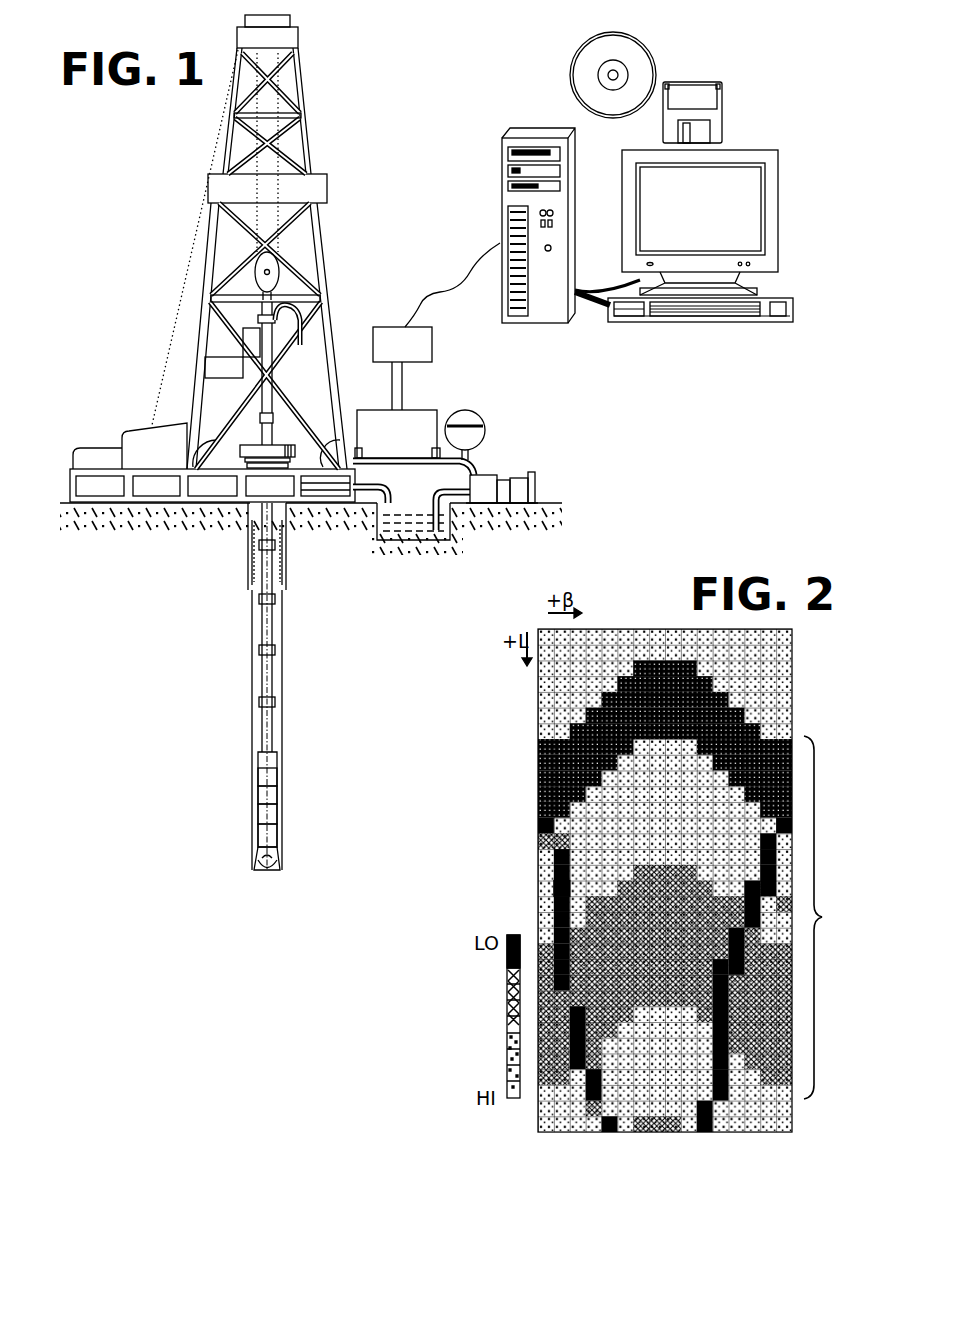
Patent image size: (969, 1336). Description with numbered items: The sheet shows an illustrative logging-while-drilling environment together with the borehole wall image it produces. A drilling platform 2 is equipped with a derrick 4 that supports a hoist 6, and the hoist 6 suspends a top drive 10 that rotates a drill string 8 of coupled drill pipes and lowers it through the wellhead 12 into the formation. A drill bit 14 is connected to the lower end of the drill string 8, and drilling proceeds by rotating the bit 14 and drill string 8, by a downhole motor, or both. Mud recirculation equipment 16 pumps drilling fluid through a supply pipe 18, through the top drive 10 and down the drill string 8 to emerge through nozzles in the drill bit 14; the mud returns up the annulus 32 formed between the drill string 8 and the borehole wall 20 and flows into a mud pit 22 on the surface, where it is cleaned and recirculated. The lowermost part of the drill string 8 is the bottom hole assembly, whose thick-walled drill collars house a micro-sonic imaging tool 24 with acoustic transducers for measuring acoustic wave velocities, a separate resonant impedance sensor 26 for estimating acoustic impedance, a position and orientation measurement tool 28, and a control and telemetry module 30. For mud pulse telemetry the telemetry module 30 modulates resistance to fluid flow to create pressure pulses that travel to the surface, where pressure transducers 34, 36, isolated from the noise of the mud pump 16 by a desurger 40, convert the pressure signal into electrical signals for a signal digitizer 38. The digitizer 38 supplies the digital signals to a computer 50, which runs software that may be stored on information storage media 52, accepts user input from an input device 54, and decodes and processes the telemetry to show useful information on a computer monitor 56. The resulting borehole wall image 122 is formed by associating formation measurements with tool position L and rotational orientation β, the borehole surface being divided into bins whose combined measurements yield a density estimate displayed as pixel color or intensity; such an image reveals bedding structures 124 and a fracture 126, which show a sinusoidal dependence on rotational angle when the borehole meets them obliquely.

In FIG. 1, the drilling platform 2 is at (70, 475).
In FIG. 1, the derrick 4 is at (308, 143).
In FIG. 1, the hoist 6 is at (280, 267).
In FIG. 1, the drill string 8 is at (272, 632).
In FIG. 1, the top drive 10 is at (268, 340).
In FIG. 1, the wellhead 12 is at (252, 450).
In FIG. 1, the drill bit 14 is at (275, 867).
In FIG. 1, the mud recirculation equipment 16 is at (482, 478).
In FIG. 1, the supply pipe 18 is at (445, 466).
In FIG. 1, the borehole wall 20 is at (283, 637).
In FIG. 1, the mud pit 22 is at (392, 525).
In FIG. 1, the micro-sonic imaging tool 24 is at (260, 830).
In FIG. 1, the resonant impedance sensor 26 is at (278, 820).
In FIG. 1, the position and orientation measurement tool 28 is at (258, 795).
In FIG. 1, the control and telemetry module 30 is at (278, 785).
In FIG. 1, the annulus 32 is at (252, 762).
In FIG. 1, the pressure transducer 34 is at (370, 444).
In FIG. 1, the pressure transducer 36 is at (432, 452).
In FIG. 1, the signal digitizer 38 is at (414, 356).
In FIG. 1, the desurger 40 is at (459, 412).
In FIG. 1, the computer 50 is at (572, 248).
In FIG. 1, the information storage media 52 is at (676, 80).
In FIG. 1, the input device 54 is at (773, 321).
In FIG. 1, the computer monitor 56 is at (758, 270).
In FIG. 2, the borehole wall image 122 is at (547, 1133).
In FIG. 2, the bedding structures 124 is at (836, 917).
In FIG. 2, the fracture 126 is at (553, 890).